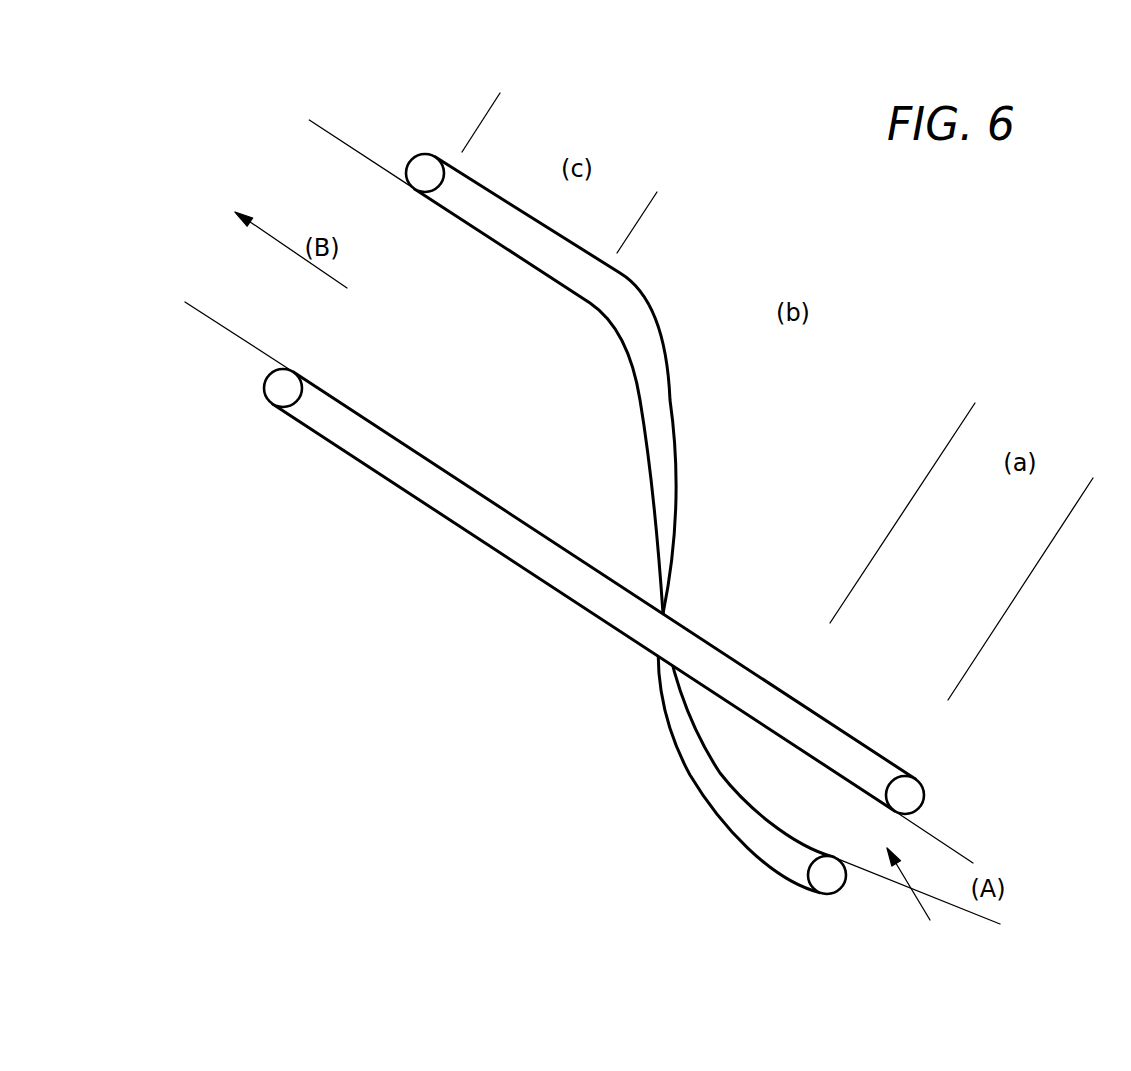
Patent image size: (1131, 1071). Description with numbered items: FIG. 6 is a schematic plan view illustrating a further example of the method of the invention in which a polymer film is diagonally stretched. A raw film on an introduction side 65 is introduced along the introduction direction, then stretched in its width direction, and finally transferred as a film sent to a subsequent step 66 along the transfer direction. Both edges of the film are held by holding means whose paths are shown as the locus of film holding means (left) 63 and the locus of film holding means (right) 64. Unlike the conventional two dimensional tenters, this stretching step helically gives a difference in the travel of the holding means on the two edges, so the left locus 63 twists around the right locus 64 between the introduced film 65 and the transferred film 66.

The locus of film holding means (left) 63 is at (520, 263).
The locus of film holding means (right) 64 is at (420, 453).
The film on an introduction side 65 is at (945, 843).
The film sent to a subsequent step 66 is at (360, 152).